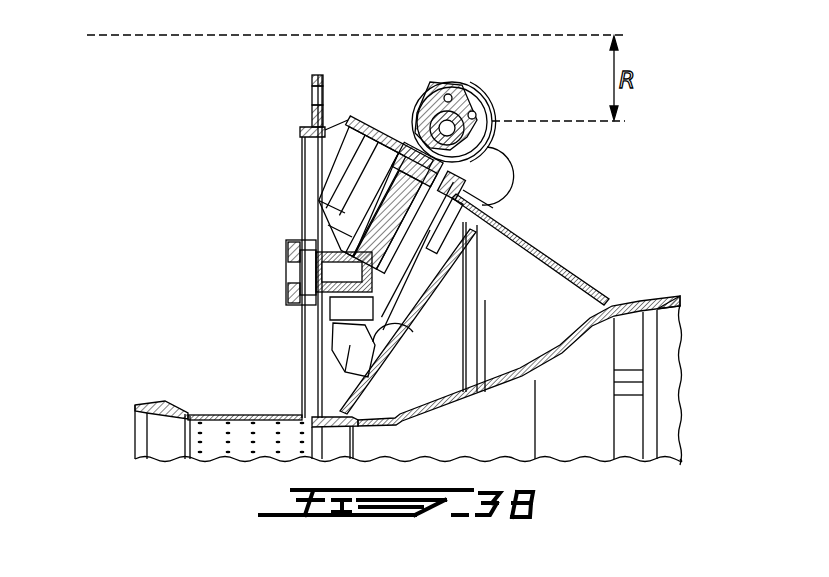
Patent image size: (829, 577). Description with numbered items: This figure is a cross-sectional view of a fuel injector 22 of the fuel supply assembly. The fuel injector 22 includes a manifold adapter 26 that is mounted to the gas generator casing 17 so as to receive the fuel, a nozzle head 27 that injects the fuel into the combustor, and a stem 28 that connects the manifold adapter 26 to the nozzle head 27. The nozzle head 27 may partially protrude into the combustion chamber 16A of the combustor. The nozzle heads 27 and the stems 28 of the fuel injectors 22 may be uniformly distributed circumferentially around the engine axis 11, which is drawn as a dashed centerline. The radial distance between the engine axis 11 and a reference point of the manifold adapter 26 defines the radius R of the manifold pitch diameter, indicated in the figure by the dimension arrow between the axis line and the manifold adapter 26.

The engine axis 11 is at (114, 34).
The combustion chamber 16A is at (198, 345).
The gas generator casing 17 is at (490, 207).
The fuel injector 22 is at (376, 104).
The manifold adapter 26 is at (458, 97).
The nozzle head 27 is at (284, 254).
The stem 28 is at (352, 213).